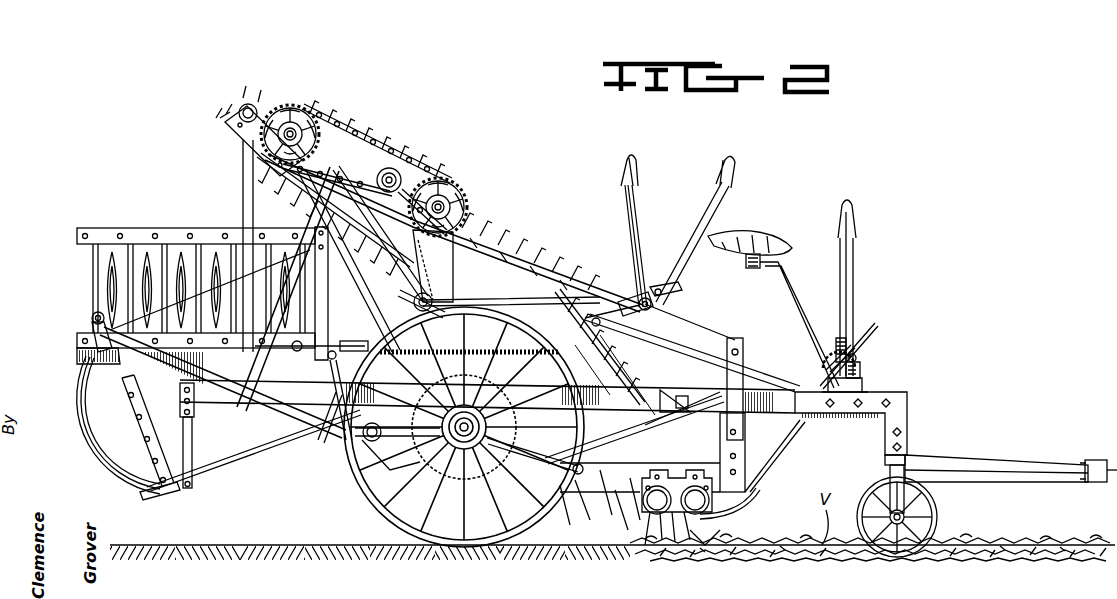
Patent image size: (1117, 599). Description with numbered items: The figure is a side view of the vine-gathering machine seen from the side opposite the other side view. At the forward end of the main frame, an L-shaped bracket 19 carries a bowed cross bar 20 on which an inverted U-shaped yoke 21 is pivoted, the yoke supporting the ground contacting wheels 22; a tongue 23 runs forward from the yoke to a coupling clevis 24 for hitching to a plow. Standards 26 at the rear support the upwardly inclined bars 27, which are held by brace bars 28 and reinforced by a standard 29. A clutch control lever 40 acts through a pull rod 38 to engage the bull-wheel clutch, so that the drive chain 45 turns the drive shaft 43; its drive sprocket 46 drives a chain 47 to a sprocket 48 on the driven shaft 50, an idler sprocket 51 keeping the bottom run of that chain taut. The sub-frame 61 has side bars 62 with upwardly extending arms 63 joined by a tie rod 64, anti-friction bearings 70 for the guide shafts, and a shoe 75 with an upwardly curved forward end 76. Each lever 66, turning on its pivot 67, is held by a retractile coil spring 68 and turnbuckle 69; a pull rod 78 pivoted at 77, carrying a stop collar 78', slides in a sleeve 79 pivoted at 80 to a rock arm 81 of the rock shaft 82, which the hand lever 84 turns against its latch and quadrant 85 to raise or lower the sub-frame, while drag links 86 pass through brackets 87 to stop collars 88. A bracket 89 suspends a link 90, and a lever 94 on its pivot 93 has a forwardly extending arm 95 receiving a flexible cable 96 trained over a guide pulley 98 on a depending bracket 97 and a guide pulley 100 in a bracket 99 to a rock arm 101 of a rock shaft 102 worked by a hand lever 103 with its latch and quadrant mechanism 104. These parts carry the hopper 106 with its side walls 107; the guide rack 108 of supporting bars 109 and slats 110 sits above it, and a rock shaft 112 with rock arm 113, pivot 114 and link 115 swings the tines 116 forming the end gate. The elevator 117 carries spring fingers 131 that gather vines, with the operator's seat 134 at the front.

The L-shaped bracket 19 is at (892, 408).
The cross bar 20 is at (906, 458).
The inverted U-shaped yoke 21 is at (892, 472).
The ground contacting wheels 22 is at (938, 512).
The tongue 23 is at (985, 467).
The coupling clevis 24 is at (1096, 462).
The standards 26 is at (242, 178).
The upwardly inclined bars 27 is at (528, 258).
The brace bars 28 is at (250, 368).
The standard 29 is at (440, 266).
The pull rod 38 is at (612, 340).
The clutch control lever 40 is at (696, 228).
The drive shaft 43 is at (446, 203).
The drive chain 45 is at (490, 300).
The drive sprocket 46 is at (446, 190).
The chain 47 is at (386, 150).
The sprocket 48 is at (310, 116).
The driven shaft 50 is at (290, 120).
The idler sprocket 51 is at (397, 170).
The sub-frame 61 is at (611, 512).
The side bars 62 is at (582, 496).
The upwardly extending arms 63 is at (745, 434).
The tie rod 64 is at (745, 352).
The lever 66 is at (548, 456).
The pivot 67 is at (590, 397).
The retractile coil spring 68 is at (495, 352).
The turnbuckle 69 is at (405, 312).
The anti-friction bearings 70 is at (664, 515).
The shoe 75 is at (702, 540).
The upwardly curved forward end 76 is at (745, 500).
The pivot 77 is at (746, 472).
The pull rod 78 is at (782, 456).
The stop collar 78' is at (855, 333).
The sleeves 79 is at (838, 352).
The pivot 80 is at (866, 342).
The rock arms 81 is at (857, 357).
The rock shaft 82 is at (864, 382).
The hand lever 84 is at (853, 282).
The latch and quadrant 85 is at (862, 368).
The drag links 86 is at (602, 440).
The brackets 87 is at (666, 392).
The stop collars 88 is at (682, 396).
The bracket 89 is at (196, 412).
The link 90 is at (190, 470).
The pivot 93 is at (322, 430).
The lever 94 is at (340, 436).
The forwardly extending arm 95 is at (352, 345).
The flexible cable 96 is at (371, 440).
The depending bracket 97 is at (386, 438).
The guide pulley 98 is at (375, 466).
The bracket 99 is at (413, 301).
The guide pulley 100 is at (436, 298).
The rock arm 101 is at (632, 300).
The rock shaft 102 is at (652, 304).
The hand lever 103 is at (630, 234).
The latch and quadrant mechanism 104 is at (670, 286).
The hopper 106 is at (250, 456).
The side walls 107 is at (78, 392).
The guide rack 108 is at (96, 226).
The supporting bars 109 is at (130, 228).
The slats 110 is at (222, 262).
The rock shaft 112 is at (92, 318).
The rock arm 113 is at (92, 340).
The pivot 114 is at (86, 360).
The link 115 is at (262, 404).
The tines 116 is at (80, 432).
The elevator 117 is at (492, 222).
The spring fingers 131 is at (642, 550).
The operator's seat 134 is at (748, 236).